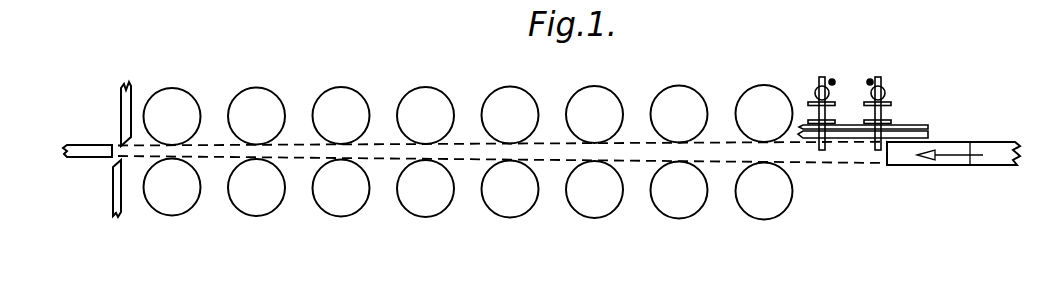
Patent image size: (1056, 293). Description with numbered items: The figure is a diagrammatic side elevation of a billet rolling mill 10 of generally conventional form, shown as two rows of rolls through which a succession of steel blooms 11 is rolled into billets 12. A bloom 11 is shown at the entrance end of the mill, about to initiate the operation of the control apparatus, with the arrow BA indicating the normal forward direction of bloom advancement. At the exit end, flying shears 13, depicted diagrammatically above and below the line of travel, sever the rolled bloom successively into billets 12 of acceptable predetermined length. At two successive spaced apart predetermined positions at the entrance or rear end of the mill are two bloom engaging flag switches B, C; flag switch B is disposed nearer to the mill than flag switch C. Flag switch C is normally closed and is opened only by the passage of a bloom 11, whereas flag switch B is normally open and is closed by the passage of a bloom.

The billet rolling mill 10 is at (513, 95).
The steel bloom 11 is at (970, 142).
The billet 12 is at (97, 145).
The flying shears 13 is at (120, 93).
The flag switch B is at (818, 118).
The flag switch C is at (882, 112).
The arrow indicating forward direction of bloom advancement BA is at (970, 165).